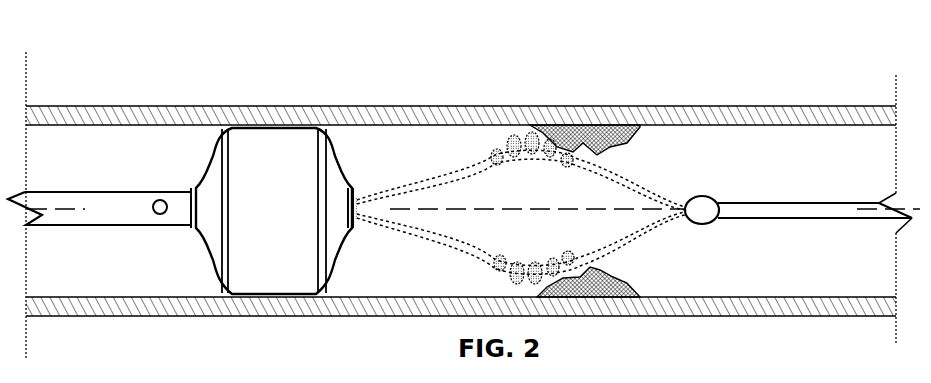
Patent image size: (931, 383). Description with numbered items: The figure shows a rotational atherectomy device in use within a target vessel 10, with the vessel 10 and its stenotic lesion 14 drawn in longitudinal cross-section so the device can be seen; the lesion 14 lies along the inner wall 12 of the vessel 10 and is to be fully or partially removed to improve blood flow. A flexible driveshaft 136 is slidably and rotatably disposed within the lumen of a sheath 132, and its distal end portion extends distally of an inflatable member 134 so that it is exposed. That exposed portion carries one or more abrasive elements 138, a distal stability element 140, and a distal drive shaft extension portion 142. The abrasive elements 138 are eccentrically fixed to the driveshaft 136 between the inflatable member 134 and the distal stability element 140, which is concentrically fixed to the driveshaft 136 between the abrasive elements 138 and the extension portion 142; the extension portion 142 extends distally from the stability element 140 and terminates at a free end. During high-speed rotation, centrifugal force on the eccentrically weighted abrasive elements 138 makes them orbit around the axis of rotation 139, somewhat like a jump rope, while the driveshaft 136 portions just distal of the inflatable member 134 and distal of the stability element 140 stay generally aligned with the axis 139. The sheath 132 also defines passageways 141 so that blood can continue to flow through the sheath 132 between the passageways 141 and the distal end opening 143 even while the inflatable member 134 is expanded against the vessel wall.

The vessel 10 is at (800, 107).
The inner wall 12 is at (653, 283).
The stenotic lesion 14 is at (616, 145).
The sheath 132 is at (102, 189).
The inflatable member 134 is at (339, 152).
The flexible driveshaft 136 is at (388, 218).
The abrasive elements 138 is at (502, 116).
The axis of rotation 139 is at (50, 209).
The distal stability element 140 is at (702, 224).
The passageways 141 is at (163, 213).
The distal drive shaft extension portion 142 is at (830, 202).
The distal end opening 143 is at (366, 199).